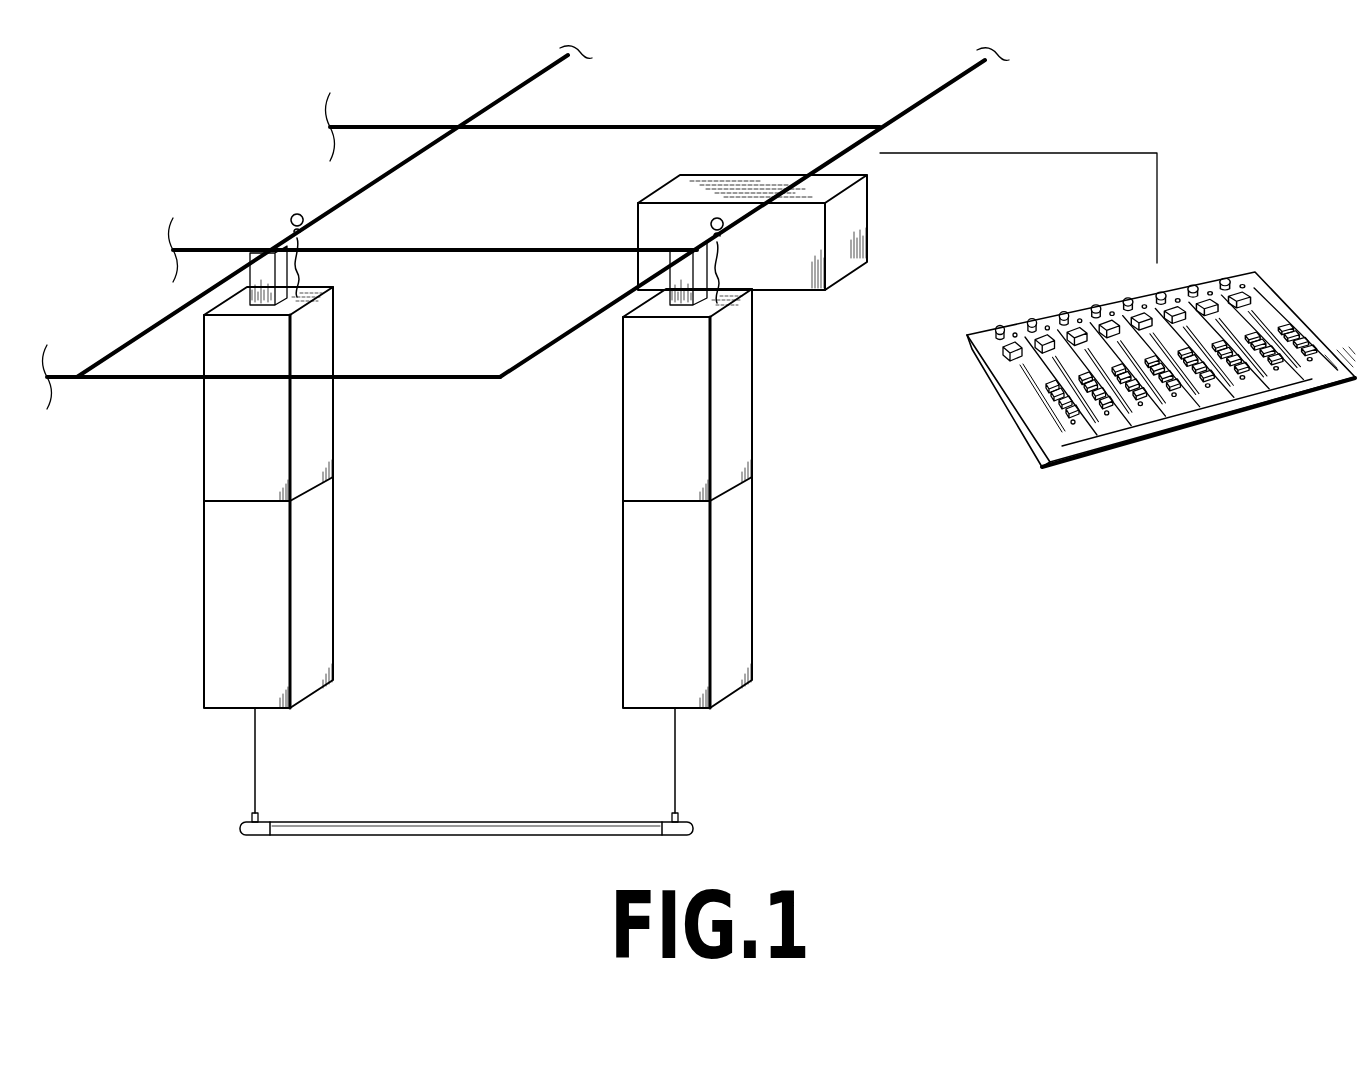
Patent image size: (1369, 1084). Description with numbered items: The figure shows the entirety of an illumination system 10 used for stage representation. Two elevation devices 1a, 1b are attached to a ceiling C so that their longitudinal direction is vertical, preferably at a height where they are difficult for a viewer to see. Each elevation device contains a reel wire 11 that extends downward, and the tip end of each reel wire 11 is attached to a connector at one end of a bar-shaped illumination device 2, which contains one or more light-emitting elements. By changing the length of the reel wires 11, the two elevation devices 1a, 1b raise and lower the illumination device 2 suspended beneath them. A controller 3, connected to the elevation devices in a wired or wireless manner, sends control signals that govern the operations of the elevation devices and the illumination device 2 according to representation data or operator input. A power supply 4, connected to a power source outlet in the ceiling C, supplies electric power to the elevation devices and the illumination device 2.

The illumination system 10 is at (252, 137).
The elevation device 1a is at (333, 422).
The elevation device 1b is at (753, 428).
The illumination device 2 is at (467, 837).
The controller 3 is at (1133, 447).
The power supply 4 is at (850, 222).
The reel wire 11 is at (677, 748).
The ceiling C is at (748, 217).